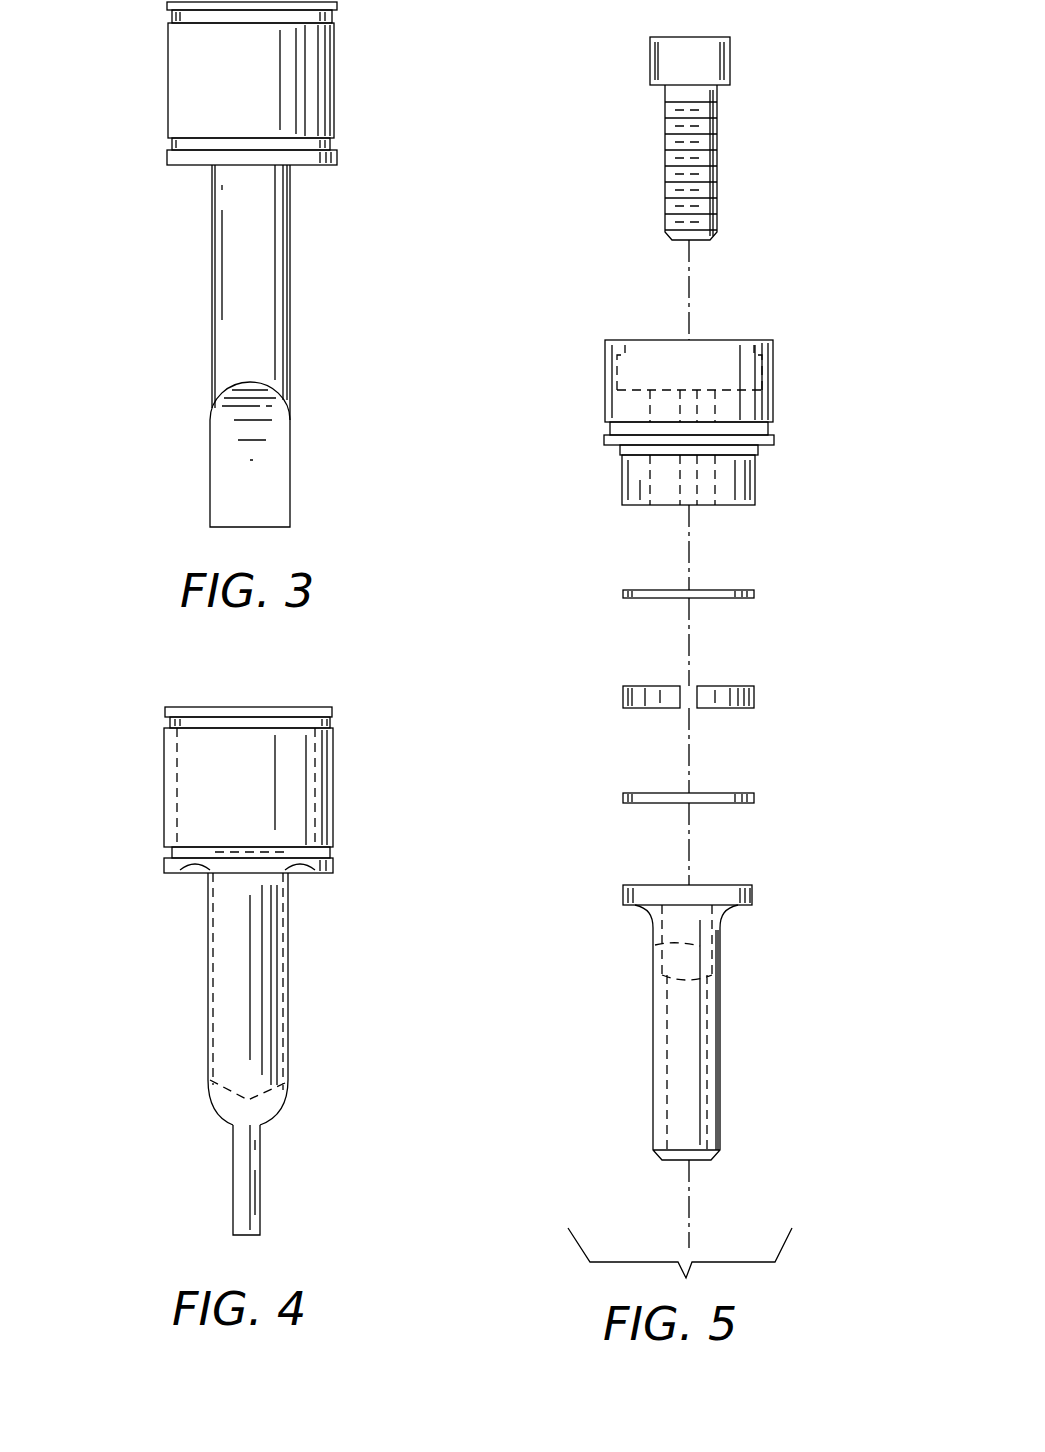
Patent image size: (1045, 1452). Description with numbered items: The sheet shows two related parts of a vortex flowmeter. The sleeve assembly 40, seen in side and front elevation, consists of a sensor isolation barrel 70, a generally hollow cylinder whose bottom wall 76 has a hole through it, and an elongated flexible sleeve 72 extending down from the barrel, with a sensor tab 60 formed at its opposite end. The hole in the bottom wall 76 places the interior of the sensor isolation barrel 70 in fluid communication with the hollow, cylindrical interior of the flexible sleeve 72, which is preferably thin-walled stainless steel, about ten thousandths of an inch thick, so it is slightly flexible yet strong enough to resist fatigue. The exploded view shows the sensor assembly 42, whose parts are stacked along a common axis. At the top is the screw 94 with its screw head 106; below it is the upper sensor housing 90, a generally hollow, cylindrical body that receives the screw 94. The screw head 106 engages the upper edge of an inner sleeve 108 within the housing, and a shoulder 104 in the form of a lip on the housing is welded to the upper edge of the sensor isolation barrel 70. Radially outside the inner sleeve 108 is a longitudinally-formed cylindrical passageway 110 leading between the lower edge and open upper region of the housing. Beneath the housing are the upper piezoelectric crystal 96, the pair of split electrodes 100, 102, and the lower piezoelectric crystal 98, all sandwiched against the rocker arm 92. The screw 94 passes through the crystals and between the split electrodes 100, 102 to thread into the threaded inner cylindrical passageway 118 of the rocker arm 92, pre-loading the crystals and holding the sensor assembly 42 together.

In FIG. 3, the sleeve assembly 40 is at (137, 242).
In FIG. 4, the sleeve assembly 40 is at (125, 1046).
In FIG. 3, the sensor isolation barrel 70 is at (212, 90).
In FIG. 4, the sensor isolation barrel 70 is at (190, 798).
In FIG. 3, the bottom wall 76 is at (302, 165).
In FIG. 4, the bottom wall 76 is at (255, 875).
In FIG. 3, the flexible sleeve 72 is at (212, 327).
In FIG. 4, the flexible sleeve 72 is at (207, 999).
In FIG. 3, the sensor tab 60 is at (236, 483).
In FIG. 4, the sensor tab 60 is at (235, 1203).
In FIG. 5, the sensor assembly 42 is at (560, 558).
In FIG. 5, the screw 94 is at (660, 160).
In FIG. 5, the screw head 106 is at (650, 68).
In FIG. 5, the upper sensor housing 90 is at (612, 395).
In FIG. 5, the inner sleeve 108 is at (775, 407).
In FIG. 5, the shoulder 104 is at (607, 440).
In FIG. 5, the cylindrical passageway 110 is at (640, 475).
In FIG. 5, the upper piezoelectric crystal 96 is at (755, 588).
In FIG. 5, the split electrode 100 is at (623, 693).
In FIG. 5, the split electrode 102 is at (757, 693).
In FIG. 5, the lower piezoelectric crystal 98 is at (757, 787).
In FIG. 5, the rocker arm 92 is at (655, 1075).
In FIG. 5, the threaded inner cylindrical passageway 118 is at (655, 945).